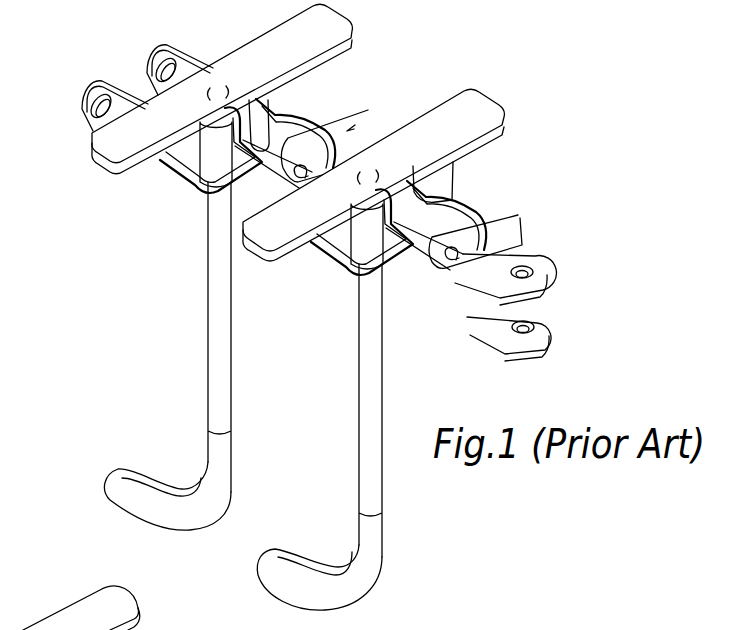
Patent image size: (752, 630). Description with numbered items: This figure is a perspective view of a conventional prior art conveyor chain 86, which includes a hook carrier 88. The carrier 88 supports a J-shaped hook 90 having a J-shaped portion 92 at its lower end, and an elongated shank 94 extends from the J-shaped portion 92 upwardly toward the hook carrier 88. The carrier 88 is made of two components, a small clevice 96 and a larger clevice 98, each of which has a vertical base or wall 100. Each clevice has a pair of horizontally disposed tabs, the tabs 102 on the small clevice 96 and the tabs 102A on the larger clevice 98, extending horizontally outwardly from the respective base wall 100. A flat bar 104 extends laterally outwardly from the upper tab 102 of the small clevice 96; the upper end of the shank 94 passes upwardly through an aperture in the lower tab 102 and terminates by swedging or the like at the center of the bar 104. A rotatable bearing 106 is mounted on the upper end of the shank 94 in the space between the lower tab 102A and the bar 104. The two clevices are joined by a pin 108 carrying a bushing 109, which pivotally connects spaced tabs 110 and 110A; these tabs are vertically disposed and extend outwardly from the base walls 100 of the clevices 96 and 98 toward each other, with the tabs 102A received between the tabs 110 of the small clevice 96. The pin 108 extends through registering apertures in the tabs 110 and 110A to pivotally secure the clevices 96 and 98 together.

The chain 86 is at (610, 261).
The hook carrier 88 is at (349, 128).
The J-shaped hook 90 is at (242, 419).
The J-shaped portion 92 is at (145, 506).
The shank 94 is at (208, 311).
The small clevice 96 is at (293, 100).
The larger clevice 98 is at (422, 333).
The base wall 100 is at (266, 105).
The tabs 102 is at (258, 110).
The tabs 102A is at (182, 172).
The flat bar 104 is at (355, 26).
The rotatable bearing 106 is at (195, 145).
The pin 108 is at (235, 205).
The bushing 109 is at (297, 166).
The tabs 110 is at (578, 204).
The tabs 110A is at (465, 215).